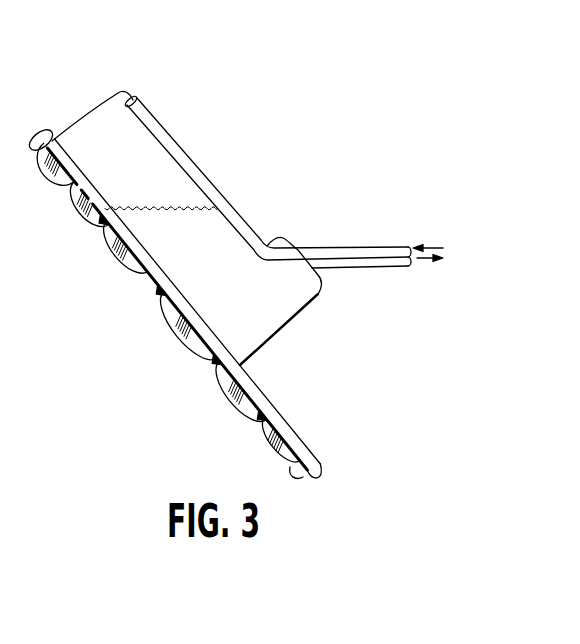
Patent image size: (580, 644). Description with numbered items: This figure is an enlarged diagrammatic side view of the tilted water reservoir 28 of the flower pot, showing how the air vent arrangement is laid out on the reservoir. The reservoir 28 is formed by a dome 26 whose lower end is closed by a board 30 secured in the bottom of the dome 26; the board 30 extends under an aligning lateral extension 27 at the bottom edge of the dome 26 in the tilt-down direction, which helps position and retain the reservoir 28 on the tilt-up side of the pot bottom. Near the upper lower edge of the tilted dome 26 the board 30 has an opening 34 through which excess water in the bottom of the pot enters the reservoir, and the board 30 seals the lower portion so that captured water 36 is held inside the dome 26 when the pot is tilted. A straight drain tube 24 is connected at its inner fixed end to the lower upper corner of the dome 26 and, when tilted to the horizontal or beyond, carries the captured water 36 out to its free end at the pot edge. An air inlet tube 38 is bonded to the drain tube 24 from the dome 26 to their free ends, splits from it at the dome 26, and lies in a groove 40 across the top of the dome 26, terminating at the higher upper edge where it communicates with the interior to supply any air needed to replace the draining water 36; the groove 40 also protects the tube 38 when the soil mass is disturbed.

The drain tube 24 is at (389, 265).
The dome 26 is at (158, 158).
The aligning lateral extension 27 is at (288, 432).
The reservoir 28 is at (88, 95).
The board 30 is at (175, 300).
The opening 34 is at (72, 187).
The captured water 36 is at (222, 240).
The air inlet tube 38 is at (388, 246).
The groove 40 is at (143, 113).